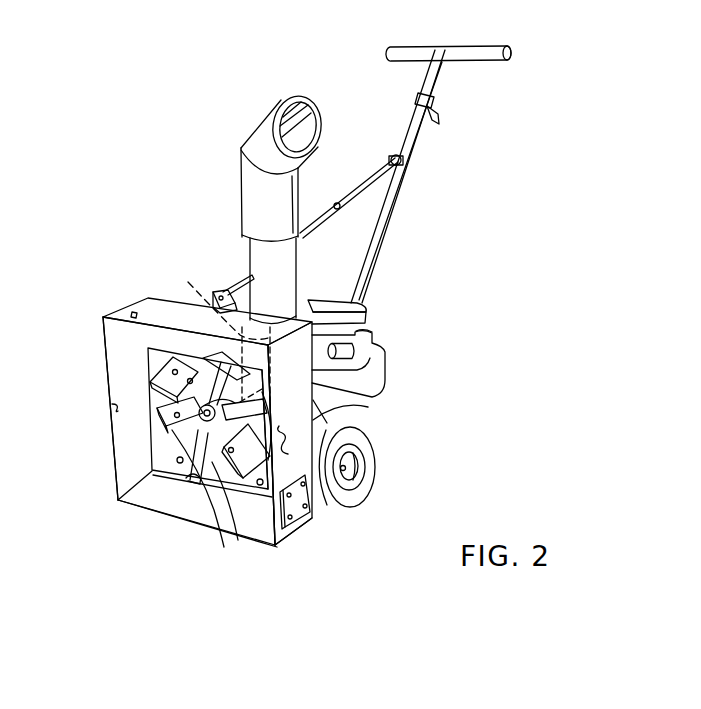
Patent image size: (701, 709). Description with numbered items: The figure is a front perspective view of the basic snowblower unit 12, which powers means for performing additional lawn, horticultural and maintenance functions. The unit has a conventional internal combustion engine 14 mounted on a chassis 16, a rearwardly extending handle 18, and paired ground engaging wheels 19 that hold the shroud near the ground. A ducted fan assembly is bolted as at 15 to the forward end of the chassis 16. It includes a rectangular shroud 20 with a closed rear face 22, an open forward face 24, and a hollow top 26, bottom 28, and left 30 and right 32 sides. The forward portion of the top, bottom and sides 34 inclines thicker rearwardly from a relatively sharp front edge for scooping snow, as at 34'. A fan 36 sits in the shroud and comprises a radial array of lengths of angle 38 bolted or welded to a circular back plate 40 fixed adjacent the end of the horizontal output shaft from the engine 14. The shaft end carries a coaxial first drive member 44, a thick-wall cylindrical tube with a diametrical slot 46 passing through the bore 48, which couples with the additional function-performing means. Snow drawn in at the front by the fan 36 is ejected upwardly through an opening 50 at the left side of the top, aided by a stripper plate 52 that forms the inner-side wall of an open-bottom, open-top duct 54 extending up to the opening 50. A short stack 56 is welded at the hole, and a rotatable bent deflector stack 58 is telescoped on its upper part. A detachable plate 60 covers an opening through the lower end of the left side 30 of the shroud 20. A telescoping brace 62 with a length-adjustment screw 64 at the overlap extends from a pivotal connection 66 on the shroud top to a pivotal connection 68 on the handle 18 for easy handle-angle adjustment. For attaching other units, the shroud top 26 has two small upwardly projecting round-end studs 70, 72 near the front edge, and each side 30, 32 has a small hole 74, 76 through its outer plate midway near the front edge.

The basic snowblower unit 12 is at (148, 153).
The internal combustion engine 14 is at (407, 284).
The bolts 15 is at (272, 547).
The chassis 16 is at (368, 407).
The handle 18 is at (416, 144).
The ground engaging wheels 19 is at (366, 429).
The rectangular shroud 20 is at (97, 343).
The closed rear face 22 is at (177, 452).
The open forward face 24 is at (148, 360).
The top 26 is at (147, 305).
The bottom 28 is at (255, 543).
The left side 30 is at (288, 533).
The right side 32 is at (115, 470).
The forward portion of the top, bottom and sides 34 is at (212, 521).
The sharp front edge 34' is at (176, 518).
The fan 36 is at (190, 481).
The lengths of angle 38 is at (208, 470).
The back plate 40 is at (192, 517).
The first drive member 44 is at (211, 404).
The diametrical slot 46 is at (266, 400).
The bore 48 is at (272, 413).
The opening 50 is at (292, 290).
The stripper plate 52 is at (204, 296).
The duct 54 is at (262, 389).
The short stack 56 is at (297, 258).
The deflector stack 58 is at (241, 147).
The detachable plate 60 is at (316, 521).
The telescoping brace 62 is at (365, 196).
The length-adjustment screw 64 is at (334, 206).
The pivotal connection 66 is at (222, 291).
The pivotal connection 68 is at (402, 162).
The stud 70 is at (251, 282).
The stud 72 is at (132, 314).
The hole 74 is at (299, 447).
The hole 76 is at (112, 404).